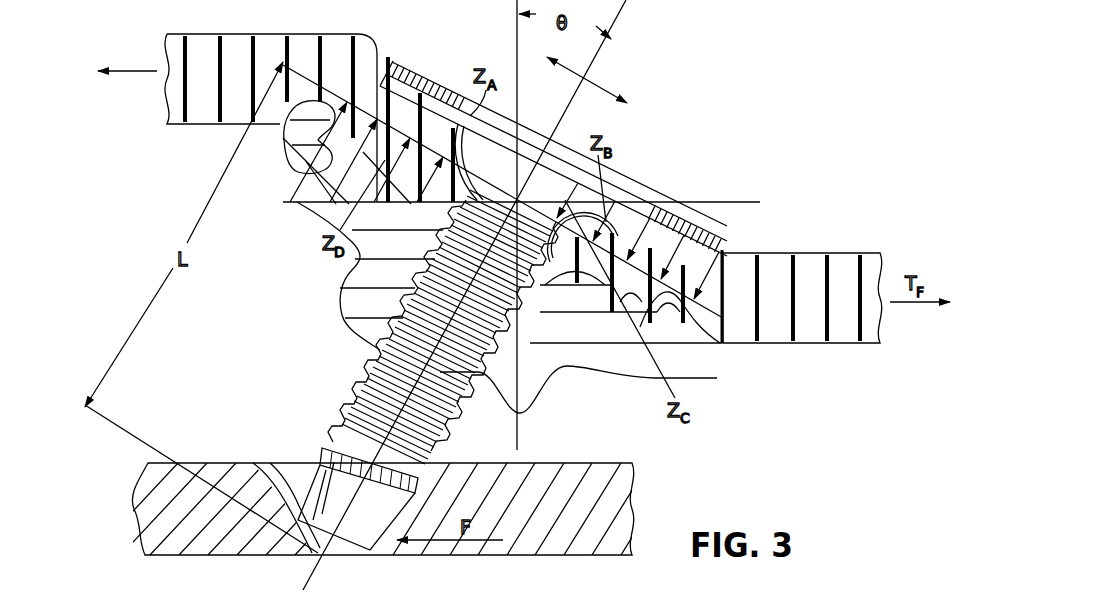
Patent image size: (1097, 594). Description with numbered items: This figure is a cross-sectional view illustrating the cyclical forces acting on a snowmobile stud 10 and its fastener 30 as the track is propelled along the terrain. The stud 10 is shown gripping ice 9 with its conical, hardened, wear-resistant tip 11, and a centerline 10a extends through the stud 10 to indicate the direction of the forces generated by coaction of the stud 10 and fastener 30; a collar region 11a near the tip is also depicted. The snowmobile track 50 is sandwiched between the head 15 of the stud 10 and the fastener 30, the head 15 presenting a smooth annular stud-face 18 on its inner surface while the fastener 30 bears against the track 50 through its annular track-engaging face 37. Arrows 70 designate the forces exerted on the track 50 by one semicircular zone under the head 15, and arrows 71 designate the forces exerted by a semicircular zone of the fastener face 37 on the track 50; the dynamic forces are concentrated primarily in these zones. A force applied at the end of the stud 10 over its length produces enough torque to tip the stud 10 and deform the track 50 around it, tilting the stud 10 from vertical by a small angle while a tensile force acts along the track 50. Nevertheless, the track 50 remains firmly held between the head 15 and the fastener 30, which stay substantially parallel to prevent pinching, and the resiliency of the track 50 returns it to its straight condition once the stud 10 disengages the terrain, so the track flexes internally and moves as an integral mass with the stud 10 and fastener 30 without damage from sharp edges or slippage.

The ice 9 is at (590, 523).
The snowmobile stud 10 is at (463, 297).
The centerline 10a is at (618, 17).
The tip 11 is at (360, 560).
The screw tip collar 11a is at (320, 553).
The head 15 is at (617, 187).
The annular stud-face 18 is at (432, 92).
The fastener 30 is at (606, 362).
The annular track-engaging face 37 is at (296, 134).
The snowmobile track 50 is at (807, 330).
The arrows 70 is at (294, 165).
The arrows 71 is at (695, 205).